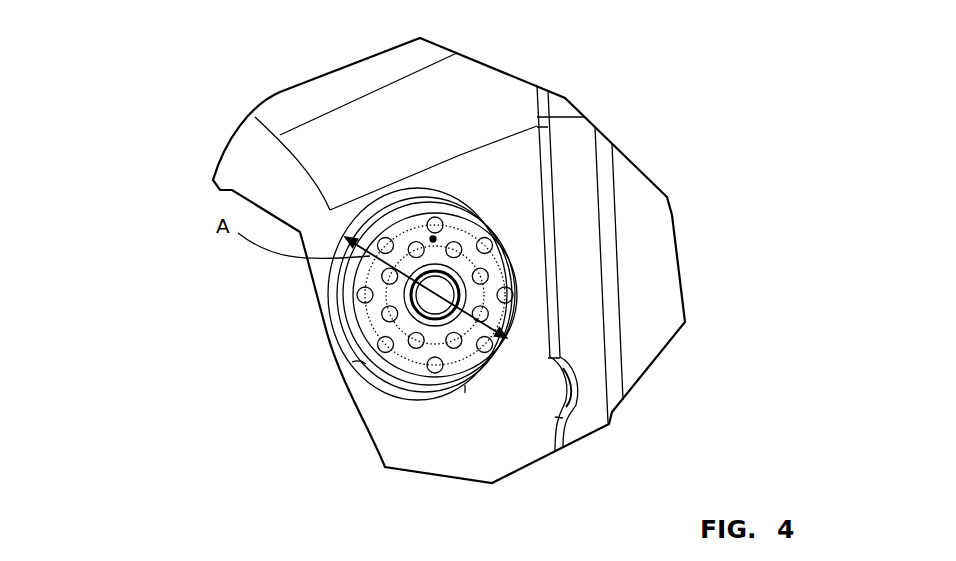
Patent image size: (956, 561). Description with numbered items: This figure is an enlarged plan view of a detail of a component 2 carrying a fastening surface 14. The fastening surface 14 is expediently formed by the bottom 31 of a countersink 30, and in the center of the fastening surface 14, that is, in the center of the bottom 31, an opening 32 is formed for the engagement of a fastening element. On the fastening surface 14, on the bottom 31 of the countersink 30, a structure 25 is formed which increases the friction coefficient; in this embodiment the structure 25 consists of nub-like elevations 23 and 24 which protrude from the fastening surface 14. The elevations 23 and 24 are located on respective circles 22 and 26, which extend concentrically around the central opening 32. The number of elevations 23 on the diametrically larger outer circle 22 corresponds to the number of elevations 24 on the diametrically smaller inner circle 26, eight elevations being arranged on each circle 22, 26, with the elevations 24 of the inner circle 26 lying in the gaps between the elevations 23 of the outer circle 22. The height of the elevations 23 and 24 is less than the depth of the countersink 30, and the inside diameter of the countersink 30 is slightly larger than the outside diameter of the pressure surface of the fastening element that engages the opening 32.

The wheel hub body 2 is at (580, 133).
The fastening surface 14 is at (503, 258).
The outer circle 22 is at (382, 318).
The elevations 23 is at (362, 297).
The elevations 24 is at (388, 277).
The structure 25 is at (433, 239).
The inner circle 26 is at (437, 343).
The countersink 30 is at (360, 366).
The bottom 31 is at (404, 374).
The opening 32 is at (448, 297).